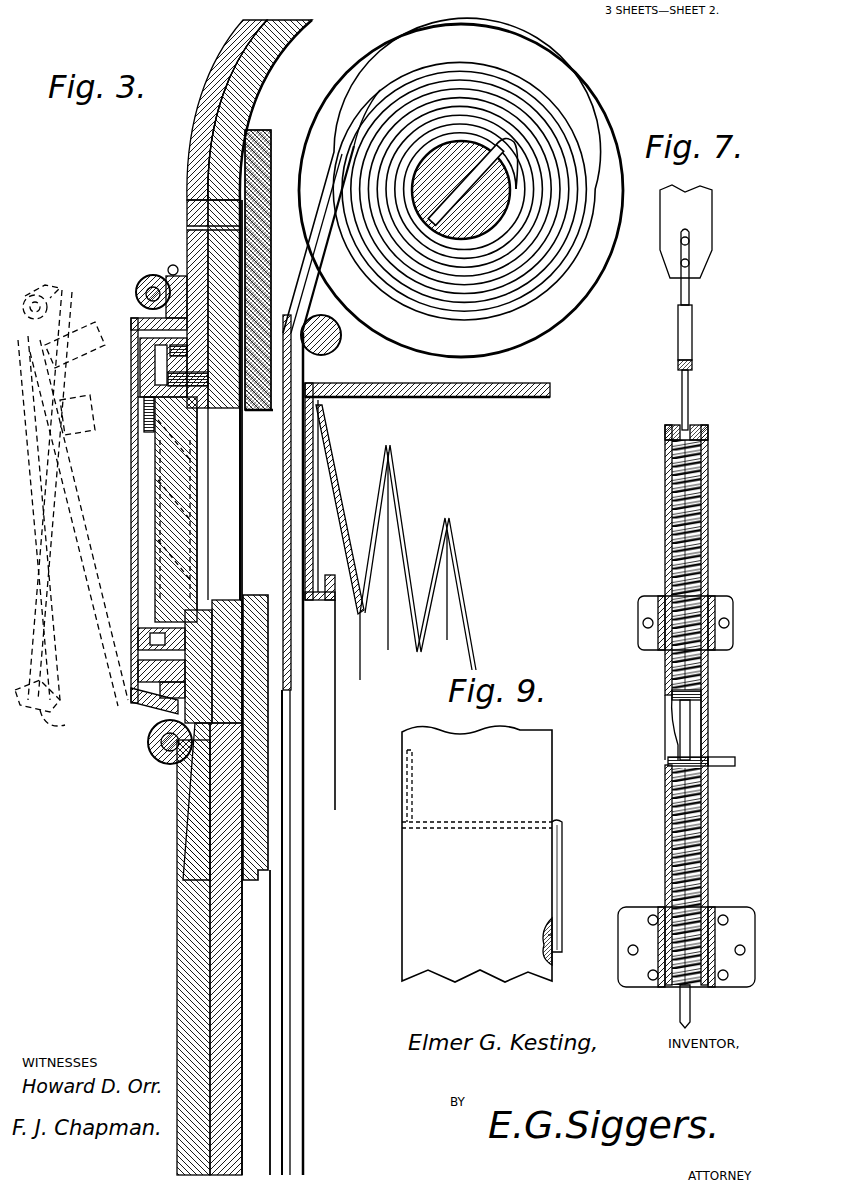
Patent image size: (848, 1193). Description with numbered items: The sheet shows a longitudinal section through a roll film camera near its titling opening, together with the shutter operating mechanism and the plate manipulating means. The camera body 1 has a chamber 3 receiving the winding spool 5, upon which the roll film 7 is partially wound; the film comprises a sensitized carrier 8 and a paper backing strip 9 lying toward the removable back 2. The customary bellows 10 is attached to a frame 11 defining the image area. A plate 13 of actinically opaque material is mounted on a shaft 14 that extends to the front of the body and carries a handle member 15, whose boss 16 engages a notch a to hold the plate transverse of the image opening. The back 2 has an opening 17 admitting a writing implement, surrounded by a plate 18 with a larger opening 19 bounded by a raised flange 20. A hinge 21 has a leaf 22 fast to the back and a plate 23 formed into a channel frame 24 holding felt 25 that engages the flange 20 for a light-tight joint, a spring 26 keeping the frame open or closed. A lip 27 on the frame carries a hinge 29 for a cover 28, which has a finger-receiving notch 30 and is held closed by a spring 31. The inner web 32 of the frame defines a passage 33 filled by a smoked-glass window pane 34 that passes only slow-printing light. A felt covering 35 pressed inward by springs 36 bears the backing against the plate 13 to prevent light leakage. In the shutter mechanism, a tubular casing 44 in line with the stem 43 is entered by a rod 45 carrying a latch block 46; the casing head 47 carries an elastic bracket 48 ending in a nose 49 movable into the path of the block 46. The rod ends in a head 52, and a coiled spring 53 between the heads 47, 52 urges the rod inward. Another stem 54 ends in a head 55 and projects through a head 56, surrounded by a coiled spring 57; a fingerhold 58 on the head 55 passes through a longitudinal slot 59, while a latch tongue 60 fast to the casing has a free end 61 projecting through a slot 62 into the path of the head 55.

In FIG. 3, the camera body 1 is at (187, 140).
In FIG. 9, the camera body 1 is at (402, 890).
In FIG. 3, the removable back 2 is at (220, 977).
In FIG. 3, the chamber 3 is at (260, 215).
In FIG. 3, the winding spool 5 is at (495, 212).
In FIG. 3, the roll film 7 is at (472, 314).
In FIG. 3, the sensitized carrier 8 is at (328, 283).
In FIG. 3, the backing strip 9 is at (302, 246).
In FIG. 3, the bellows 10 is at (402, 514).
In FIG. 3, the frame 11 is at (336, 612).
In FIG. 3, the plate 13 is at (324, 470).
In FIG. 9, the plate 13 is at (413, 760).
In FIG. 9, the shaft 14 is at (468, 830).
In FIG. 9, the handle member 15 is at (562, 868).
In FIG. 9, the boss 16 is at (543, 942).
In FIG. 9, the notch or recess a is at (546, 926).
In FIG. 3, the opening or passage 17 is at (225, 687).
In FIG. 3, the plate 18 is at (258, 695).
In FIG. 3, the opening 19 is at (200, 620).
In FIG. 3, the raised margin or flange 20 is at (205, 652).
In FIG. 3, the hinge 21 is at (164, 766).
In FIG. 3, the hinge leaf 22 is at (179, 942).
In FIG. 3, the hinge plate 23 is at (168, 698).
In FIG. 3, the channel frame 24 is at (152, 636).
In FIG. 3, the felt 25 is at (142, 350).
In FIG. 3, the spring 26 is at (192, 820).
In FIG. 3, the lip or prolongation 27 is at (176, 266).
In FIG. 3, the cover 28 is at (131, 545).
In FIG. 3, the hinge 29 is at (136, 288).
In FIG. 3, the finger-receiving notch 30 is at (140, 705).
In FIG. 3, the spring 31 is at (168, 268).
In FIG. 3, the inner wall or web 32 is at (146, 420).
In FIG. 3, the passage 33 is at (202, 486).
In FIG. 3, the window pane 34 is at (172, 498).
In FIG. 3, the felt covering 35 is at (310, 373).
In FIG. 3, the springs 36 is at (314, 413).
In FIG. 7, the stem 43 is at (706, 228).
In FIG. 7, the tubular casing 44 is at (708, 545).
In FIG. 7, the rod 45 is at (690, 400).
In FIG. 7, the latch block 46 is at (693, 335).
In FIG. 7, the head 47 is at (678, 428).
In FIG. 7, the bracket 48 is at (708, 435).
In FIG. 7, the nose 49 is at (693, 366).
In FIG. 7, the head 52 is at (678, 695).
In FIG. 7, the coiled spring 53 is at (666, 488).
In FIG. 7, the stem 54 is at (691, 1002).
In FIG. 7, the head 55 is at (670, 762).
In FIG. 7, the head 56 is at (672, 988).
In FIG. 7, the coiled spring 57 is at (706, 852).
In FIG. 7, the fingerhold 58 is at (724, 766).
In FIG. 7, the longitudinal slot 59 is at (704, 722).
In FIG. 7, the latch tongue 60 is at (666, 672).
In FIG. 7, the free end 61 is at (688, 745).
In FIG. 7, the slot 62 is at (668, 748).